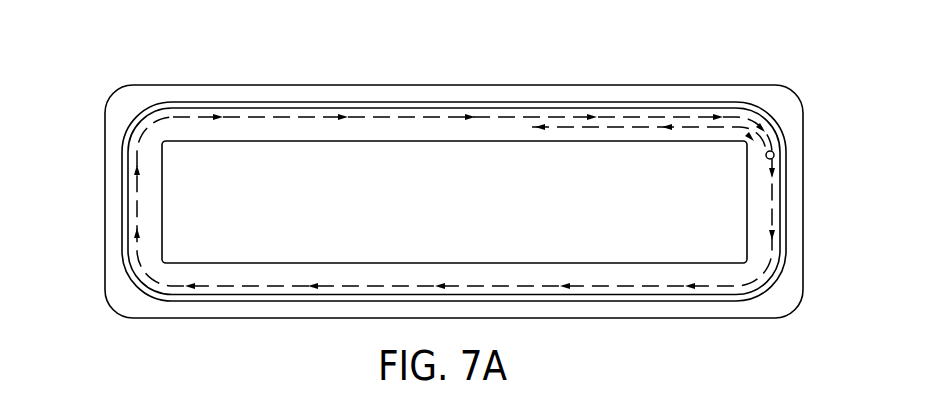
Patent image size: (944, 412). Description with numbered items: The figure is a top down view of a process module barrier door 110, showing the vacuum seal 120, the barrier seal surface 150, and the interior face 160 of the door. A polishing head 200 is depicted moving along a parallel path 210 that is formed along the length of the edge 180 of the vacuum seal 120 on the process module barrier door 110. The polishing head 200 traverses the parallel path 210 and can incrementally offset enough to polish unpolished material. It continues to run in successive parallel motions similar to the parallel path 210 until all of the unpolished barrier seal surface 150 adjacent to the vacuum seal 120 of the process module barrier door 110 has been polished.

The process module barrier door 110 is at (106, 74).
The vacuum seal 120 is at (781, 184).
The barrier seal surface 150 is at (759, 246).
The interior face 160 is at (172, 205).
The edge 180 is at (777, 137).
The polishing head 200 is at (775, 155).
The parallel path 210 is at (139, 192).